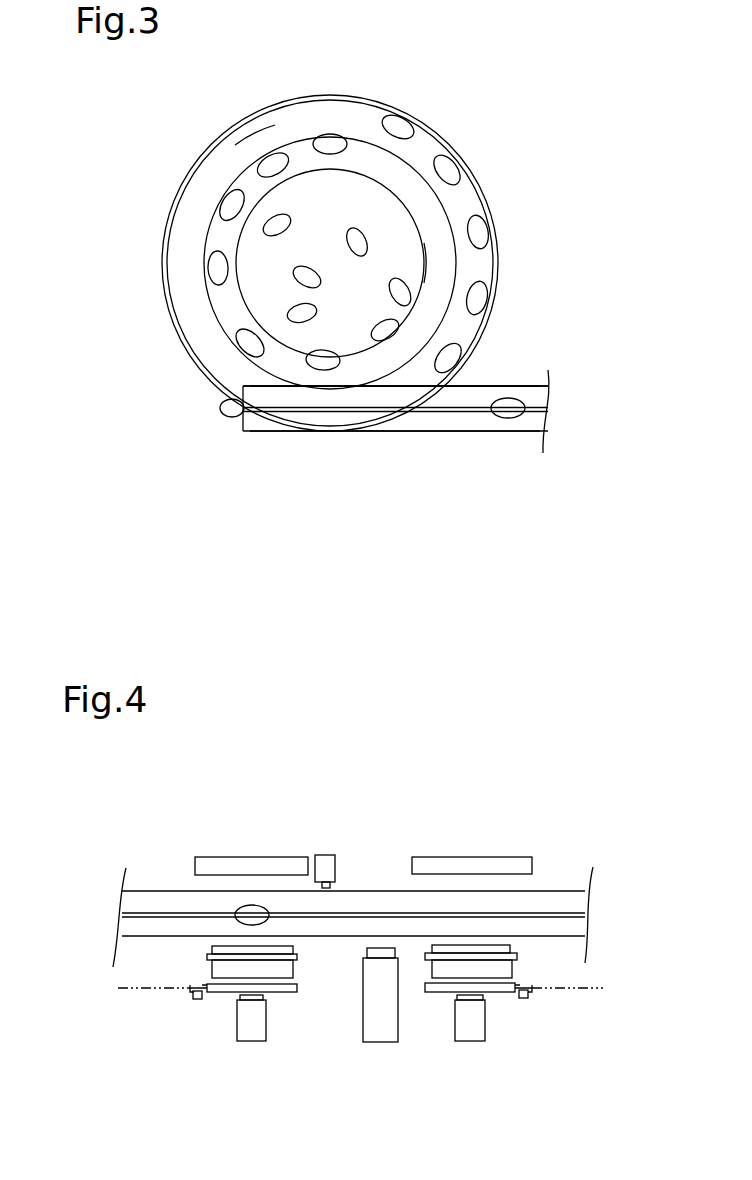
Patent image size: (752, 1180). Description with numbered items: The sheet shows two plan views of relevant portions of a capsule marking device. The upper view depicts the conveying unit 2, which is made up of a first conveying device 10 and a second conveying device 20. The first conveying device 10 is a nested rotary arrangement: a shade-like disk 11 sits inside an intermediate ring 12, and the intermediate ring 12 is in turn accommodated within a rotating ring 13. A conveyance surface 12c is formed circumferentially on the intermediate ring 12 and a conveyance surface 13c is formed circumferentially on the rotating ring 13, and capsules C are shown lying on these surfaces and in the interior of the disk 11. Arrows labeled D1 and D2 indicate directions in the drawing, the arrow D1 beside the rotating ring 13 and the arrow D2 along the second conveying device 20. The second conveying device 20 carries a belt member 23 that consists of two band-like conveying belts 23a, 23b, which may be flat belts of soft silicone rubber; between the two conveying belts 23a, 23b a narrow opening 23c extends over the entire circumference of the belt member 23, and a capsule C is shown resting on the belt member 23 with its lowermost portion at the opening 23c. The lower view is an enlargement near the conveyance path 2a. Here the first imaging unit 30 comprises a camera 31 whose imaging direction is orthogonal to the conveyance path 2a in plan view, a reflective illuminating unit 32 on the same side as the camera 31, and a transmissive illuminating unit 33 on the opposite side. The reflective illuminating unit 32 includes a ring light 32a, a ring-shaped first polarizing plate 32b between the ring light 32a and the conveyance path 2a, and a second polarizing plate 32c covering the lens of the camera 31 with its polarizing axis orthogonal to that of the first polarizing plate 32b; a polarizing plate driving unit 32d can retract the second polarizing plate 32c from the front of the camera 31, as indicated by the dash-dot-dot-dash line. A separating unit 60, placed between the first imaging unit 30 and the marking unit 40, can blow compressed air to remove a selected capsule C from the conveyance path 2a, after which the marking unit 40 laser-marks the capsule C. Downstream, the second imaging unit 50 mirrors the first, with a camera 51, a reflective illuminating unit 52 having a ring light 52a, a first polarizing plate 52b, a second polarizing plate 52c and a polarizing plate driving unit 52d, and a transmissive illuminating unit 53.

In FIG. 3, the conveying unit 2 is at (168, 390).
In FIG. 3, the conveyance path 2a is at (528, 372).
In FIG. 4, the conveyance path 2a is at (175, 878).
In FIG. 3, the first conveying device 10 is at (168, 187).
In FIG. 3, the shade-like disk 11 is at (260, 292).
In FIG. 3, the intermediate ring 12 is at (447, 212).
In FIG. 3, the conveyance surface 12c is at (438, 262).
In FIG. 3, the rotating ring 13 is at (458, 143).
In FIG. 3, the conveyance surface 13c is at (256, 140).
In FIG. 3, the second conveying device 20 is at (259, 461).
In FIG. 3, the belt member 23 is at (442, 440).
In FIG. 3, the conveying belt 23a is at (400, 422).
In FIG. 3, the conveying belt 23b is at (288, 398).
In FIG. 3, the opening 23c is at (378, 414).
In FIG. 4, the opening 23c is at (495, 912).
In FIG. 3, the capsule C is at (401, 124).
In FIG. 4, the capsule C is at (248, 910).
In FIG. 3, the rotation direction D1 is at (510, 312).
In FIG. 3, the conveyance direction D2 is at (460, 442).
In FIG. 4, the first imaging unit 30 is at (212, 1083).
In FIG. 4, the camera 31 is at (252, 1035).
In FIG. 4, the reflective illuminating unit 32 is at (199, 1033).
In FIG. 4, the ring light 32a is at (207, 957).
In FIG. 4, the first polarizing plate 32b is at (291, 948).
In FIG. 4, the second polarizing plate 32c is at (293, 993).
In FIG. 4, the polarizing plate driving unit 32d is at (197, 1000).
In FIG. 4, the transmissive illuminating unit 33 is at (248, 862).
In FIG. 4, the marking unit 40 is at (382, 1034).
In FIG. 4, the second imaging unit 50 is at (528, 1055).
In FIG. 4, the camera 51 is at (468, 1035).
In FIG. 4, the reflective illuminating unit 52 is at (517, 928).
In FIG. 4, the ring light 52a is at (513, 958).
In FIG. 4, the first polarizing plate 52b is at (447, 948).
In FIG. 4, the second polarizing plate 52c is at (437, 993).
In FIG. 4, the polarizing plate driving unit 52d is at (529, 997).
In FIG. 4, the transmissive illuminating unit 53 is at (475, 862).
In FIG. 4, the separating unit 60 is at (330, 860).